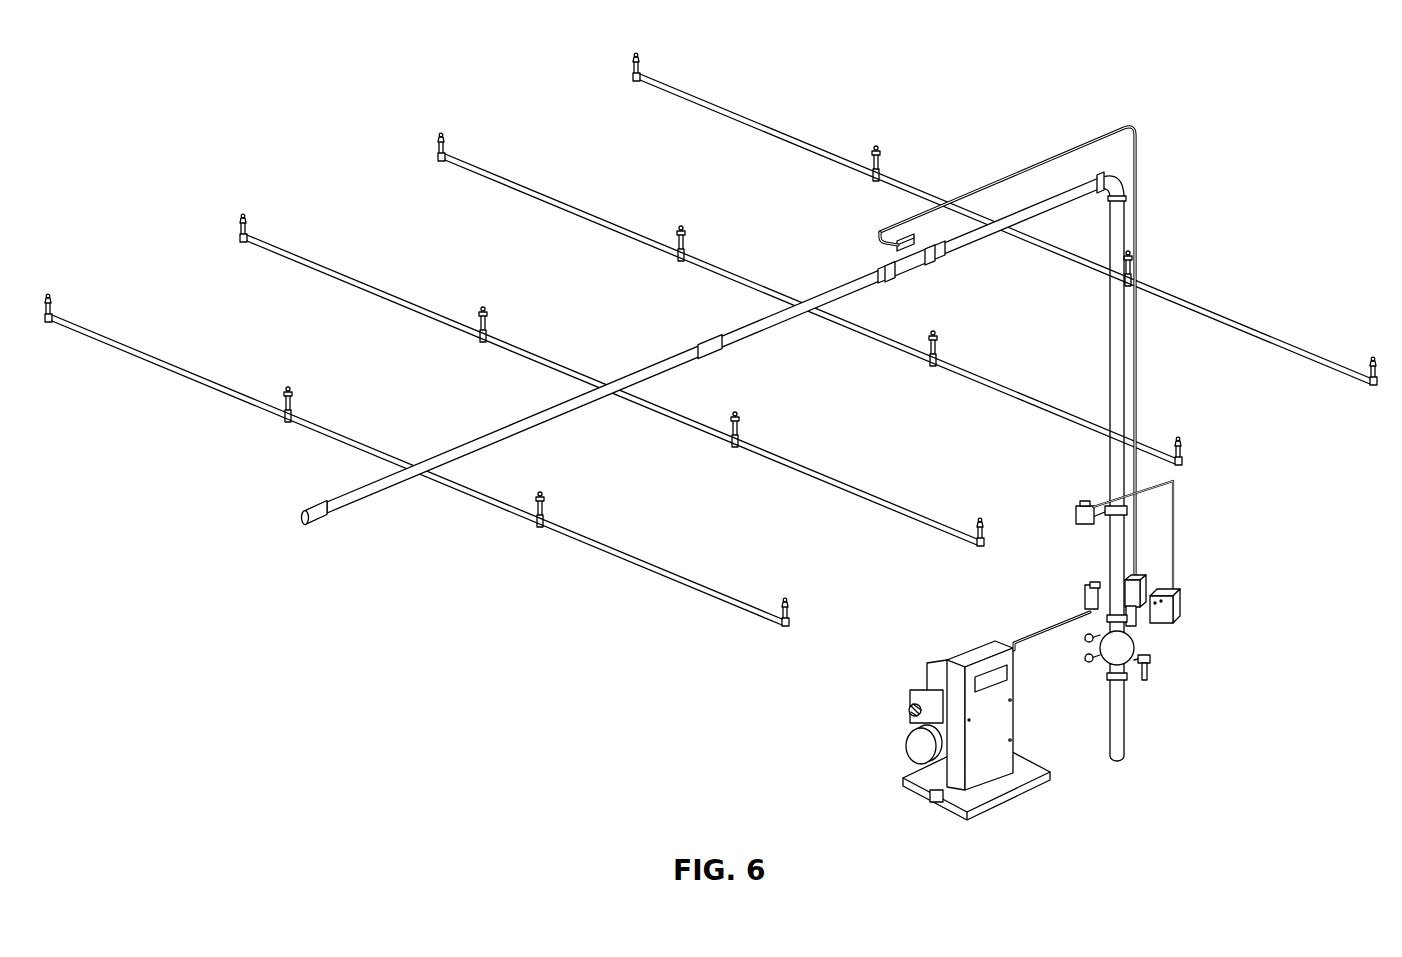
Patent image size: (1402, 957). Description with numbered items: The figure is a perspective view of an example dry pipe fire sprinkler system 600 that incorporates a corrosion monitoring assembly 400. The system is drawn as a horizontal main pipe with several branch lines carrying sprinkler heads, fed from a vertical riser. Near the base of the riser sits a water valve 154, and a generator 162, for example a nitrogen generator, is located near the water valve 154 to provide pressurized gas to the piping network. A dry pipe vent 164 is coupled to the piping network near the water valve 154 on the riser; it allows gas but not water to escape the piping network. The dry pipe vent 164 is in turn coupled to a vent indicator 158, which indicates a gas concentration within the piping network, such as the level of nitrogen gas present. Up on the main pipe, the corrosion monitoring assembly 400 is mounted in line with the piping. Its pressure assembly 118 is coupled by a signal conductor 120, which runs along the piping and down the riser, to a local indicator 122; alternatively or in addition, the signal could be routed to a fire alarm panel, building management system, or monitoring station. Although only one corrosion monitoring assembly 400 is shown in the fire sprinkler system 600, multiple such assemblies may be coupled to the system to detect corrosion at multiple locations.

The dry pipe fire sprinkler system 600 is at (214, 90).
The signal conductor 120 is at (1018, 167).
The pressure assembly 118 is at (878, 241).
The corrosion monitoring assembly 400 is at (920, 268).
The dry pipe vent 164 is at (1090, 500).
The local indicator 122 is at (1140, 578).
The vent indicator 158 is at (1176, 612).
The water valve 154 is at (1148, 665).
The generator 162 is at (980, 648).